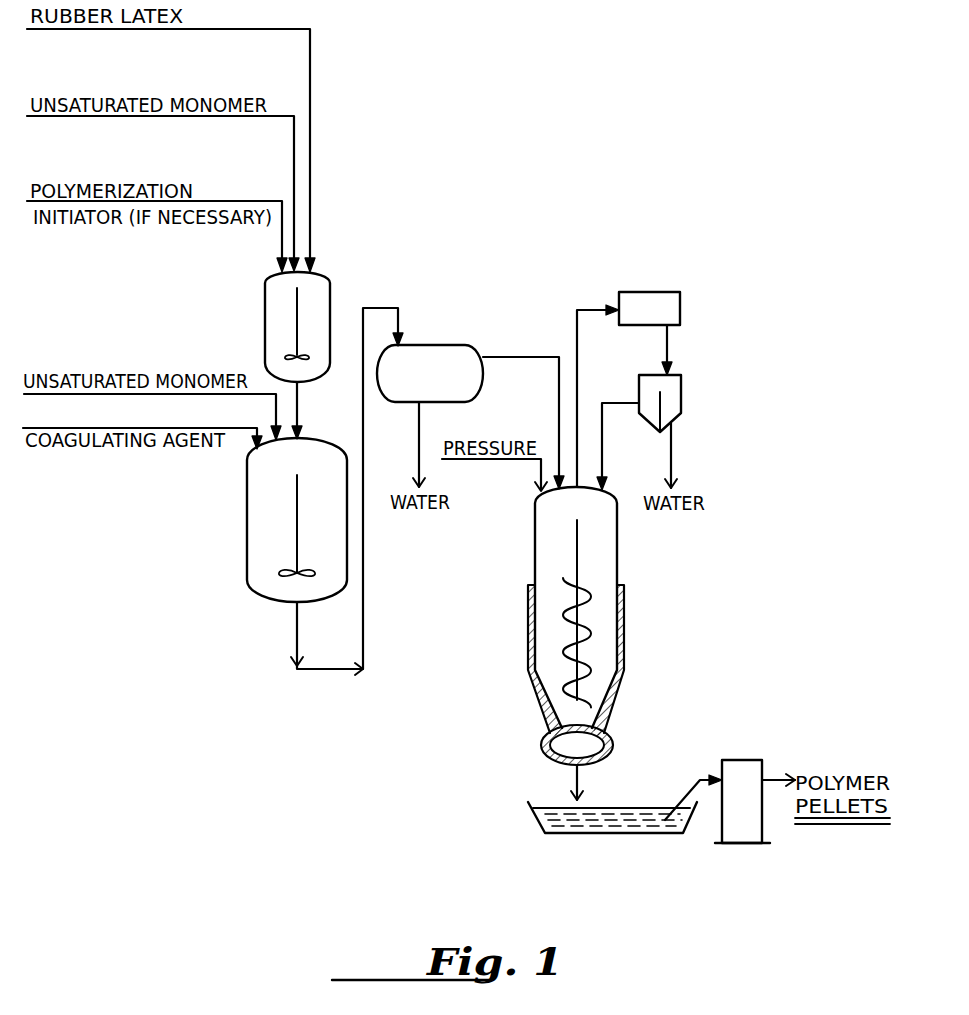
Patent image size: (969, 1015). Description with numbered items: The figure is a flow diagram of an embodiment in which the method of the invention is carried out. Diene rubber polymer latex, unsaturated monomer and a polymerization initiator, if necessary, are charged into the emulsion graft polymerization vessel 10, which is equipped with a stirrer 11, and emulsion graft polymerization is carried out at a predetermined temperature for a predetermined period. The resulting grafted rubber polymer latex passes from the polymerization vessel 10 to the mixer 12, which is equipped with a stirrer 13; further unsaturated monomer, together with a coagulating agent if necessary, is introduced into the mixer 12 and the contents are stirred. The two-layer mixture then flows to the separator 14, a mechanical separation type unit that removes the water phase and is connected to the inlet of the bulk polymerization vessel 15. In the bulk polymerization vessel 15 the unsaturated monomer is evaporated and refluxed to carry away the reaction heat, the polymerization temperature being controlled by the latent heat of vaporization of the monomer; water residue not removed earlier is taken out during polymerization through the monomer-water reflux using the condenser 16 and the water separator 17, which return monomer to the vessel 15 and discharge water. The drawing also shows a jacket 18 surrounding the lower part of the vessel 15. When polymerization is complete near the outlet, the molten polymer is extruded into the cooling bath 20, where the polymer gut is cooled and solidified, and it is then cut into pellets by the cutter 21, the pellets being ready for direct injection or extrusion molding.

The emulsion graft polymerization vessel 10 is at (310, 300).
The stirrer 11 is at (286, 356).
The mixer 12 is at (270, 538).
The stirrer 13 is at (283, 577).
The separator 14 is at (443, 360).
The bulk polymerization vessel 15 is at (603, 545).
The condenser 16 is at (672, 297).
The water separator 17 is at (672, 395).
The heating jacket 18 is at (622, 623).
The cooling bath 20 is at (553, 820).
The cutter 21 is at (740, 772).